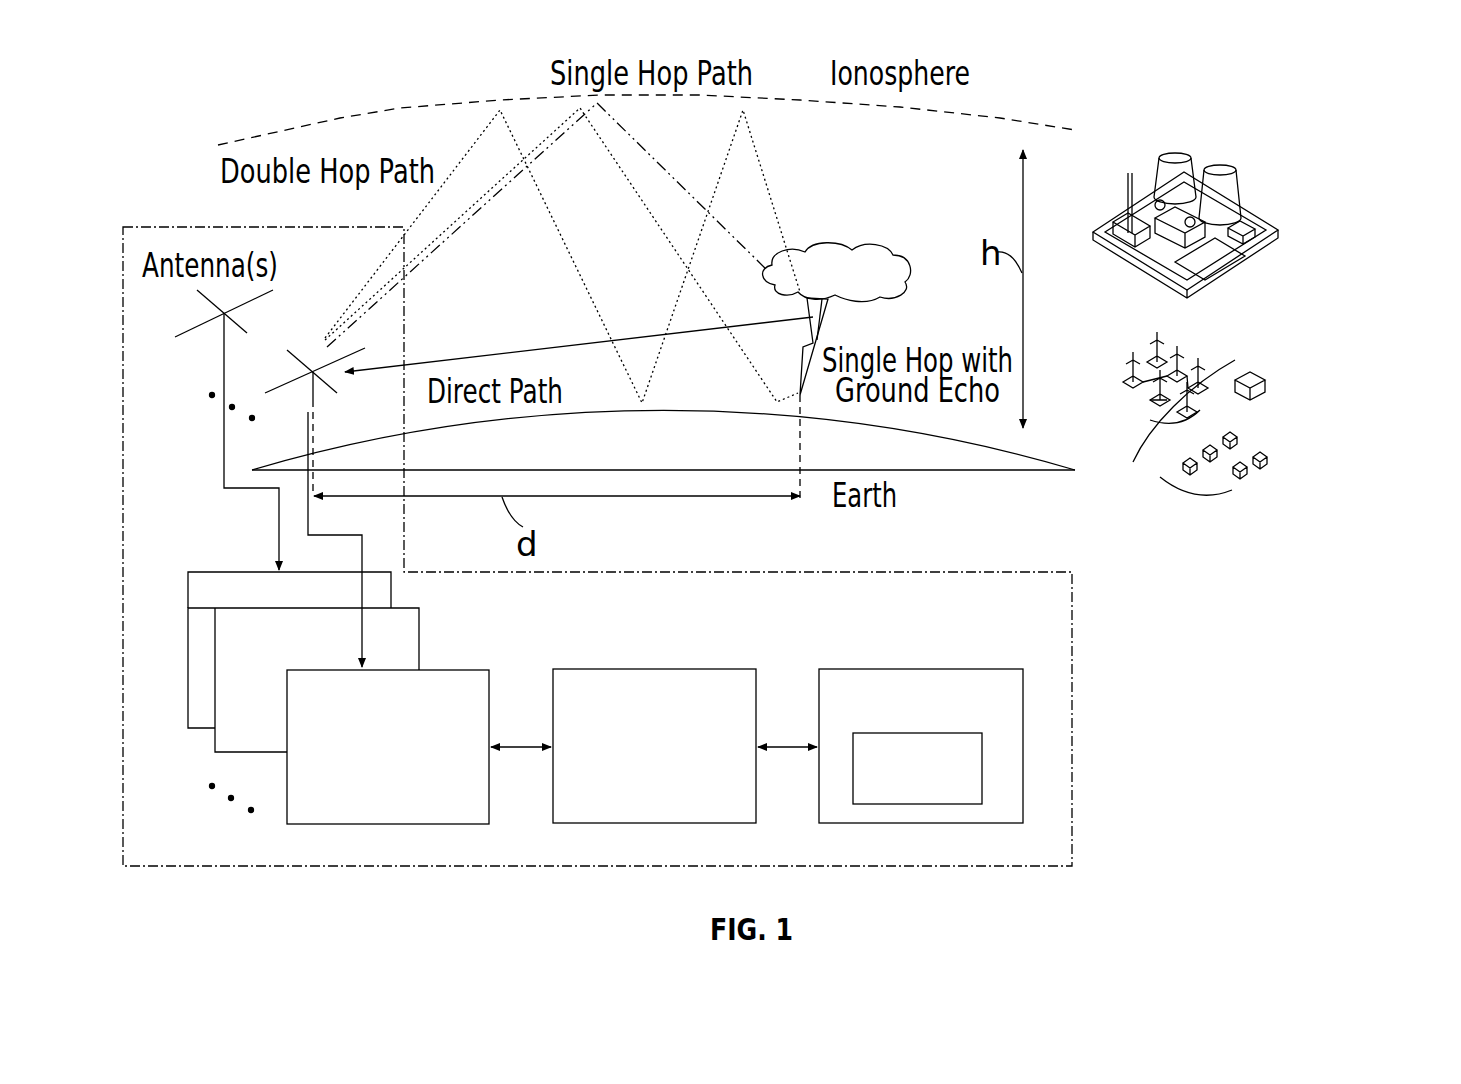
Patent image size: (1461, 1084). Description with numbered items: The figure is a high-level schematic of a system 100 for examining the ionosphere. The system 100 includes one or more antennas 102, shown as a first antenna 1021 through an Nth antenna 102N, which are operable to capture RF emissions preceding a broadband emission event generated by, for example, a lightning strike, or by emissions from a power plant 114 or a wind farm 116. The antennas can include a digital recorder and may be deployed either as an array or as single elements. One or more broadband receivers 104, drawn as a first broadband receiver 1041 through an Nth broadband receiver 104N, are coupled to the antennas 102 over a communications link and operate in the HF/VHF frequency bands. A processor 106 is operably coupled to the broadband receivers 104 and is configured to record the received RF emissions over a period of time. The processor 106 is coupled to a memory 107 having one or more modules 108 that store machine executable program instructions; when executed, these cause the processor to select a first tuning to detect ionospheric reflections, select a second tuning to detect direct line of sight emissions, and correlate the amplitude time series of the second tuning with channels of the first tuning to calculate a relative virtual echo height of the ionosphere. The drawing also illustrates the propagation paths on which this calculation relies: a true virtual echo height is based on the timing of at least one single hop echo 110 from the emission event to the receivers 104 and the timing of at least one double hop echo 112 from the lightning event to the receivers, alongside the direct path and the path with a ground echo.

The system 100 is at (147, 100).
The antennas 102 is at (249, 478).
The antenna 102N is at (222, 373).
The antenna 1021 is at (308, 360).
The broadband receivers 104 is at (316, 676).
The broadband receiver 104N is at (230, 572).
The broadband receiver 1041 is at (340, 670).
The processor 106 is at (605, 669).
The memory 107 is at (853, 669).
The modules 108 is at (892, 733).
The single hop echo 110 is at (636, 142).
The double hop echo 112 is at (768, 176).
The power plant 114 is at (1243, 258).
The wind farm 116 is at (1233, 460).